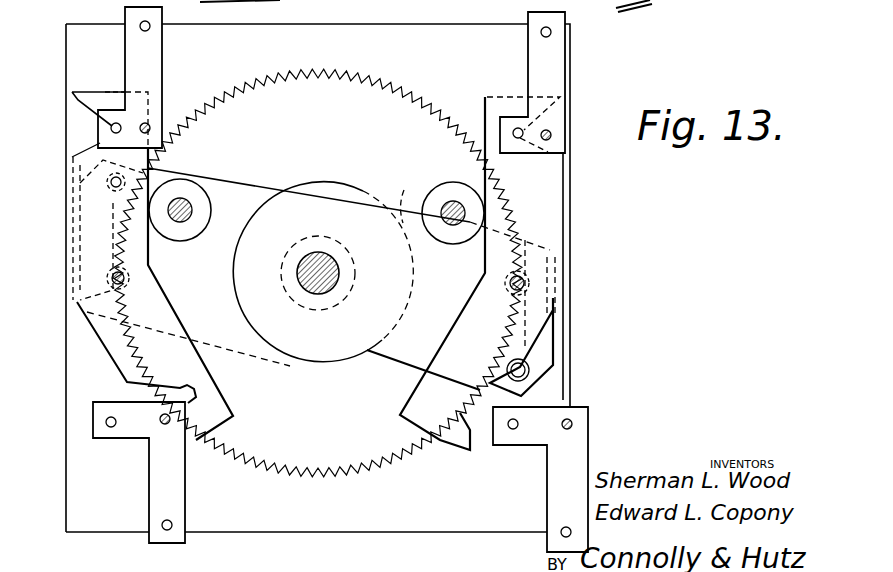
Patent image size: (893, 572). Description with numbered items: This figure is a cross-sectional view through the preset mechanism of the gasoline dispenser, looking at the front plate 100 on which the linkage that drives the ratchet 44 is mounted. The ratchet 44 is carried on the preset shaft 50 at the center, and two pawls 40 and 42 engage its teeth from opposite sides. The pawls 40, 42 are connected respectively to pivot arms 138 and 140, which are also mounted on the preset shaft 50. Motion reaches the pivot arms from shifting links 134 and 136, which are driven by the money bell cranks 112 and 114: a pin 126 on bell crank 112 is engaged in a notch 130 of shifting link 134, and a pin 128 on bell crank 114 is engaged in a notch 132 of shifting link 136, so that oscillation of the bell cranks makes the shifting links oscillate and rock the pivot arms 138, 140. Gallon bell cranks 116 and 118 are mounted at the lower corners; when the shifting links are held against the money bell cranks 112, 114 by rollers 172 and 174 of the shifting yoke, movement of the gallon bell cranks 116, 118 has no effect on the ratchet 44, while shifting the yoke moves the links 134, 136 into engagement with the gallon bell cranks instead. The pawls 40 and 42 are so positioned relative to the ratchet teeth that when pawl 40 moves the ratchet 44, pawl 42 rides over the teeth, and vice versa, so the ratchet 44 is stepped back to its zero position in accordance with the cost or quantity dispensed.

The front plate 100 is at (413, 40).
The money bell crank 112 is at (150, 52).
The money bell crank 114 is at (548, 60).
The gallon bell crank 116 is at (172, 492).
The gallon bell crank 118 is at (560, 496).
The pin 126 is at (110, 128).
The pin 128 is at (516, 128).
The notch 130 is at (97, 112).
The notch 132 is at (558, 121).
The shifting link 134 is at (86, 160).
The shifting link 136 is at (540, 212).
The pivot arm 138 is at (232, 197).
The pivot arm 140 is at (404, 195).
The pawl 40 is at (76, 236).
The pawl 42 is at (548, 348).
The ratchet 44 is at (200, 116).
The preset shaft 50 is at (340, 275).
The roller 172 is at (185, 230).
The roller 174 is at (454, 244).